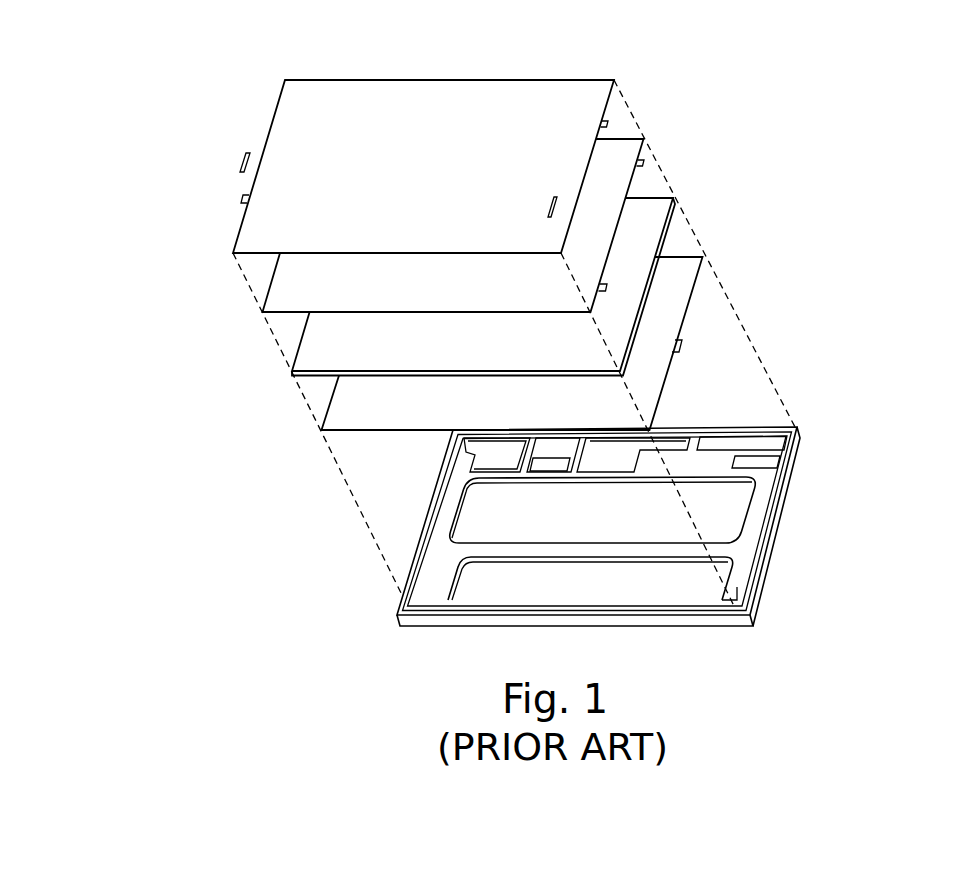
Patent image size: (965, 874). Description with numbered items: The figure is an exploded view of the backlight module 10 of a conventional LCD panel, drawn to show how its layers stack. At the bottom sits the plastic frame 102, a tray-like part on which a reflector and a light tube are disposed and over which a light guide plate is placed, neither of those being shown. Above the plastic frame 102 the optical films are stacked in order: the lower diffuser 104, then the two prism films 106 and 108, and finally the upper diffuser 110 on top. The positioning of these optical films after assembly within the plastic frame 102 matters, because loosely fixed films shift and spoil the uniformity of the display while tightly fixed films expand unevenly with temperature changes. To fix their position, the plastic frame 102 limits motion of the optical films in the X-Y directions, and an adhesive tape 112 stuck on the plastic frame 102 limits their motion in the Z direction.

The backlight module 10 is at (903, 38).
The plastic frame 102 is at (757, 512).
The lower diffuser 104 is at (668, 286).
The prism film 106 is at (645, 233).
The prism film 108 is at (621, 175).
The upper diffuser 110 is at (568, 120).
The adhesive tape 112 is at (238, 160).